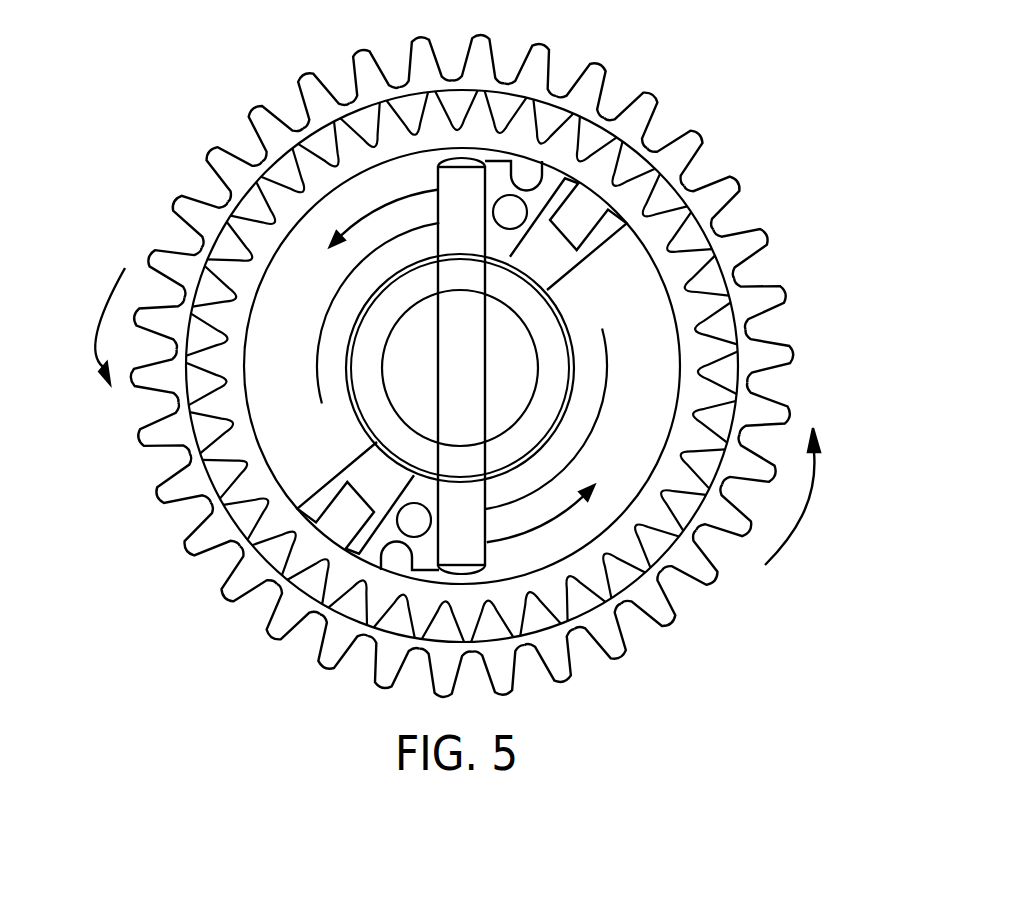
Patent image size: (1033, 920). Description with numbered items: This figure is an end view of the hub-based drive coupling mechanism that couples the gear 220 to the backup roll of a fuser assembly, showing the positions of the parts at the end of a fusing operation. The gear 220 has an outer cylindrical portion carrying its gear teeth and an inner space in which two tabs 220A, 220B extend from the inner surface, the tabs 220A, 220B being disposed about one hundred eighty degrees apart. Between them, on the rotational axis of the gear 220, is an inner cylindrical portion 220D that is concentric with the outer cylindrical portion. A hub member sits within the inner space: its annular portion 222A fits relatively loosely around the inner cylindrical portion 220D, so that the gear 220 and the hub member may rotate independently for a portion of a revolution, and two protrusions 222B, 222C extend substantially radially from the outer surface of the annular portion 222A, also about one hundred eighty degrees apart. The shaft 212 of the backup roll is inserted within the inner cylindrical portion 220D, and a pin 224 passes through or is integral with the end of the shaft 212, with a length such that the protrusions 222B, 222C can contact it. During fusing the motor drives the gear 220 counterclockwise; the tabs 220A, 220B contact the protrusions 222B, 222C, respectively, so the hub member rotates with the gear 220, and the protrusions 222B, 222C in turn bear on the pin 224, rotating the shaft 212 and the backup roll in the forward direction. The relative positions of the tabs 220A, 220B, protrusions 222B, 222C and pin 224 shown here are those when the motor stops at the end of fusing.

The gear 220 is at (200, 210).
The shaft 212 is at (398, 365).
The pin 224 is at (460, 338).
The tab 220A is at (325, 485).
The tab 220B is at (588, 254).
The inner cylindrical portion 220D is at (560, 370).
The annular portion 222A is at (362, 292).
The protrusion 222B is at (420, 575).
The protrusion 222C is at (542, 192).